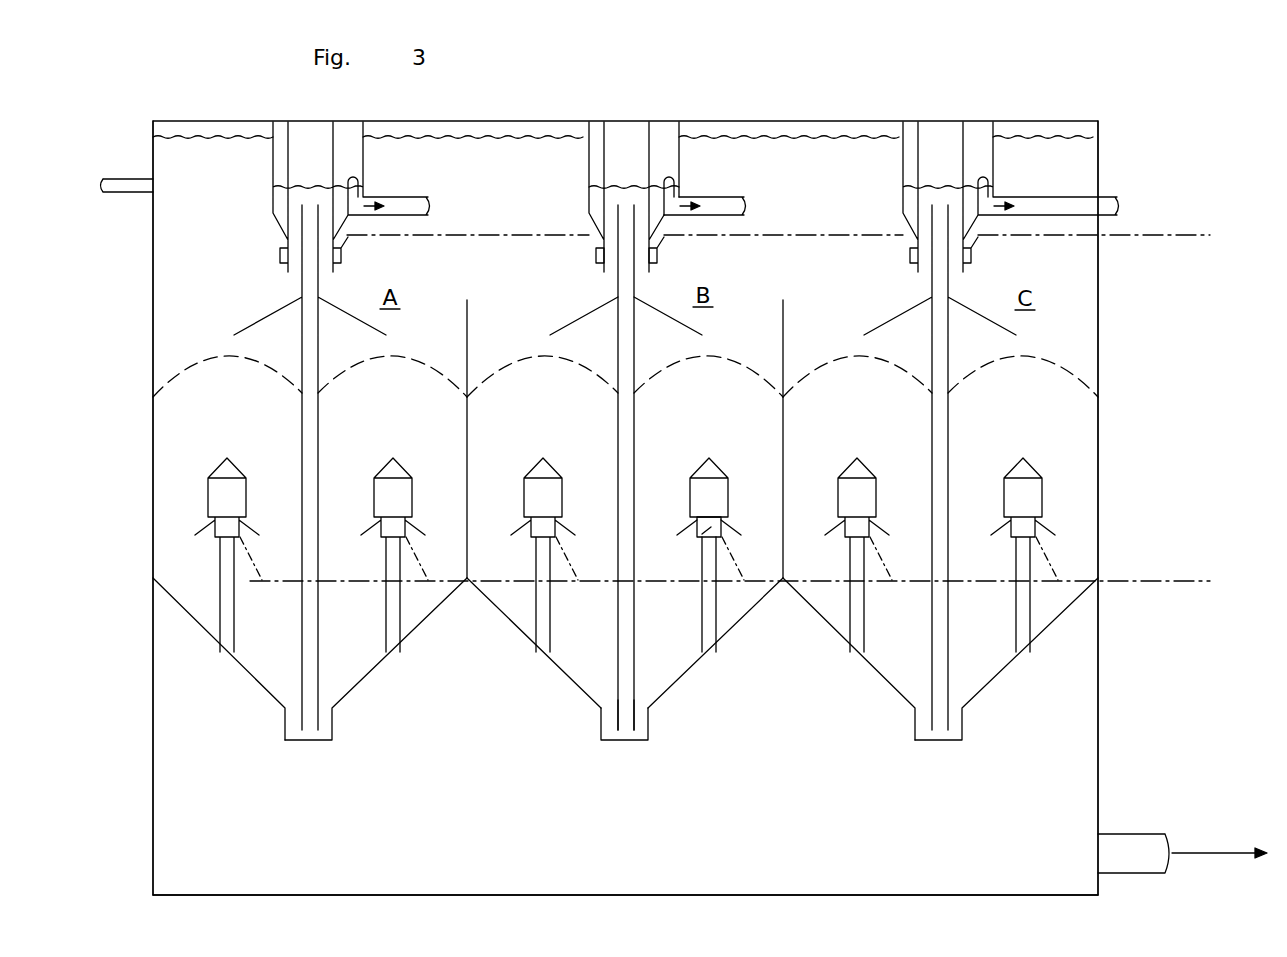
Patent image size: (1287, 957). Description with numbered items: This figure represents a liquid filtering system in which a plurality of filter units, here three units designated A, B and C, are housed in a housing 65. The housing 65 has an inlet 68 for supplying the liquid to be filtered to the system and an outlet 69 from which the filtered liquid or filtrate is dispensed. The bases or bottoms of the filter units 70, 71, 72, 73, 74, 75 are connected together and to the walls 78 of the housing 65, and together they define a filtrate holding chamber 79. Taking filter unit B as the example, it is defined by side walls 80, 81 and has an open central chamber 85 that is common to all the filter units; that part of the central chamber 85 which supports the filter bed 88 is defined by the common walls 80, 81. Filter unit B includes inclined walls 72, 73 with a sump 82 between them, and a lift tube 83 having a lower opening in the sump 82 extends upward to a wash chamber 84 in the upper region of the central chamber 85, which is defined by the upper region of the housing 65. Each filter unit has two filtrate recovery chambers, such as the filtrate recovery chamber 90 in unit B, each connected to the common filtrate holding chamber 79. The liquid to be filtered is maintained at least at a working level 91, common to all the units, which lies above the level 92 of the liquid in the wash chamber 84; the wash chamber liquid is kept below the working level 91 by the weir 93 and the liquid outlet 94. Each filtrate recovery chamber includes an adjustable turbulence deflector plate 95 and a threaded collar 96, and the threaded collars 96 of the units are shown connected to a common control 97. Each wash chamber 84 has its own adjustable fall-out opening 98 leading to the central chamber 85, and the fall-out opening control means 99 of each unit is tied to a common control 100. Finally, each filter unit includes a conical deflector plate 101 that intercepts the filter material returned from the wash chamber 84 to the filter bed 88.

The housing 65 is at (1136, 319).
The inlet 68 is at (112, 178).
The outlet 69 is at (1165, 845).
The filter unit base 70 is at (197, 620).
The filter unit base 71 is at (417, 628).
The inclined wall 72 is at (572, 688).
The inclined wall 73 is at (735, 628).
The filter unit base 74 is at (880, 680).
The filter unit base 75 is at (1046, 635).
The walls of the housing 78 is at (152, 502).
The filtrate holding chamber 79 is at (603, 840).
The side wall 80 is at (470, 315).
The side wall 81 is at (792, 338).
The sump 82 is at (601, 727).
The lift tube 83 is at (636, 693).
The wash chamber 84 is at (632, 140).
The central chamber 85 is at (703, 265).
The filter bed 88 is at (529, 417).
The filtrate recovery chamber 90 is at (728, 488).
The working level 91 is at (705, 137).
The level of the liquid in the wash chamber 92 is at (622, 185).
The weir 93 is at (680, 190).
The liquid outlet 94 is at (748, 206).
The adjustable turbulence deflector plate 95 is at (740, 530).
The threaded collar 96 is at (693, 540).
The common control 97 is at (1140, 581).
The fall-out opening 98 is at (612, 271).
The fall-out opening control means 99 is at (597, 256).
The common control 100 is at (1152, 237).
The conical deflector plate 101 is at (716, 326).